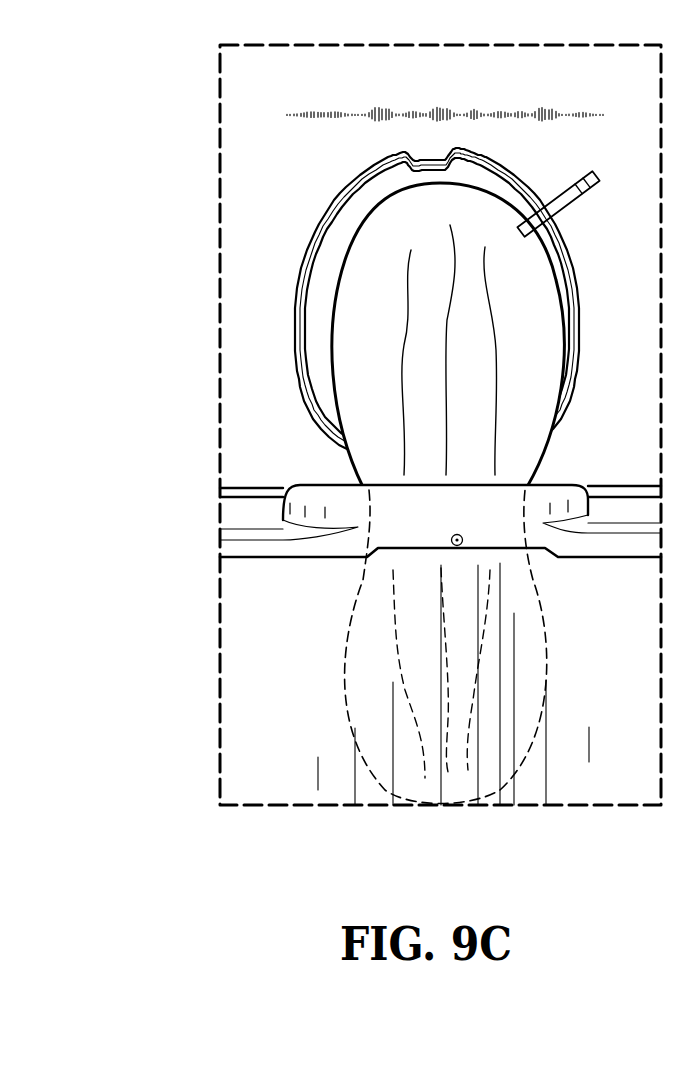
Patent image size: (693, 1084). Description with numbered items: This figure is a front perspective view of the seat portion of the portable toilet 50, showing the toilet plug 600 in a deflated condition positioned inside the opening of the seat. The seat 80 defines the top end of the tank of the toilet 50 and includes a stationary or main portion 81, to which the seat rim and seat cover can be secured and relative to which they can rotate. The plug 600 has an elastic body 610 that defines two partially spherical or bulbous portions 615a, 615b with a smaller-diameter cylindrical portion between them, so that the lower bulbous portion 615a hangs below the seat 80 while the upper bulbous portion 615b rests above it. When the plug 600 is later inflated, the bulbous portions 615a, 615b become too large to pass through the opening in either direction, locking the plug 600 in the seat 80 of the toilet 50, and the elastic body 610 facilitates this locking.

The toilet 50 is at (162, 242).
The toilet plug 600 is at (336, 305).
The body 610 is at (337, 393).
The bulbous portion 615b is at (530, 284).
The seat 80 is at (440, 573).
The main portion 81 is at (316, 515).
The bulbous portion 615a is at (510, 747).